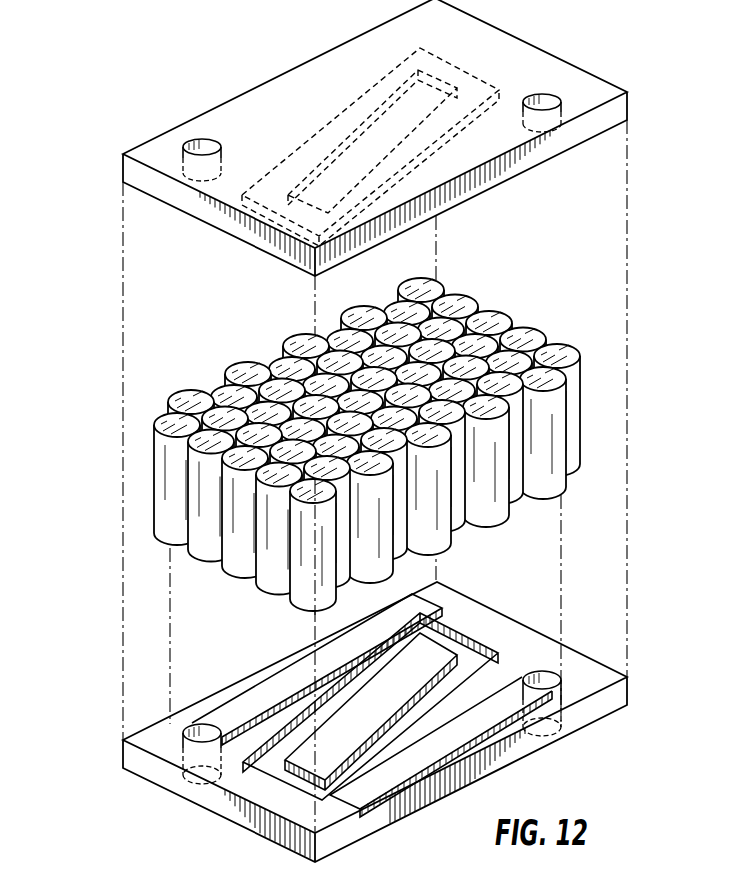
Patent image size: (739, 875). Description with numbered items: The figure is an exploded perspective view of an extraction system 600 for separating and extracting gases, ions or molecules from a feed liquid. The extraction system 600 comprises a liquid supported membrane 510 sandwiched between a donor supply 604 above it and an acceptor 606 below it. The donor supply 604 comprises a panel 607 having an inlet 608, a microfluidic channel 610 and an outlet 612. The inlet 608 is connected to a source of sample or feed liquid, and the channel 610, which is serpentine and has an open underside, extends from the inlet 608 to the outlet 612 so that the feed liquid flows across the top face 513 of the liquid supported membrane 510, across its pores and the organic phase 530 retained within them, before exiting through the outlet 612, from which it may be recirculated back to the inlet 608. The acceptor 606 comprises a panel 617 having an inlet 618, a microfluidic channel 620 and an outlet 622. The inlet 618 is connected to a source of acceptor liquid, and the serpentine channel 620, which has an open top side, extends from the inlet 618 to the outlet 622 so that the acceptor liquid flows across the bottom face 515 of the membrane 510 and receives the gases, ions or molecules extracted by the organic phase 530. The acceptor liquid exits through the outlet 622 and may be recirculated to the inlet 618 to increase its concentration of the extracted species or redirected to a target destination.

The extraction system 600 is at (92, 110).
The donor supply 604 is at (557, 50).
The panel 607 is at (588, 83).
The inlet 608 is at (203, 138).
The microfluidic channel 610 is at (282, 117).
The outlet 612 is at (554, 100).
The liquid supported membrane 510 is at (552, 326).
The top face 513 is at (248, 428).
The organic phase 530 is at (455, 361).
The bottom face 515 is at (245, 512).
The acceptor 606 is at (586, 745).
The panel 617 is at (220, 812).
The microfluidic channel 620 is at (458, 640).
The inlet 618 is at (541, 676).
The outlet 622 is at (183, 748).